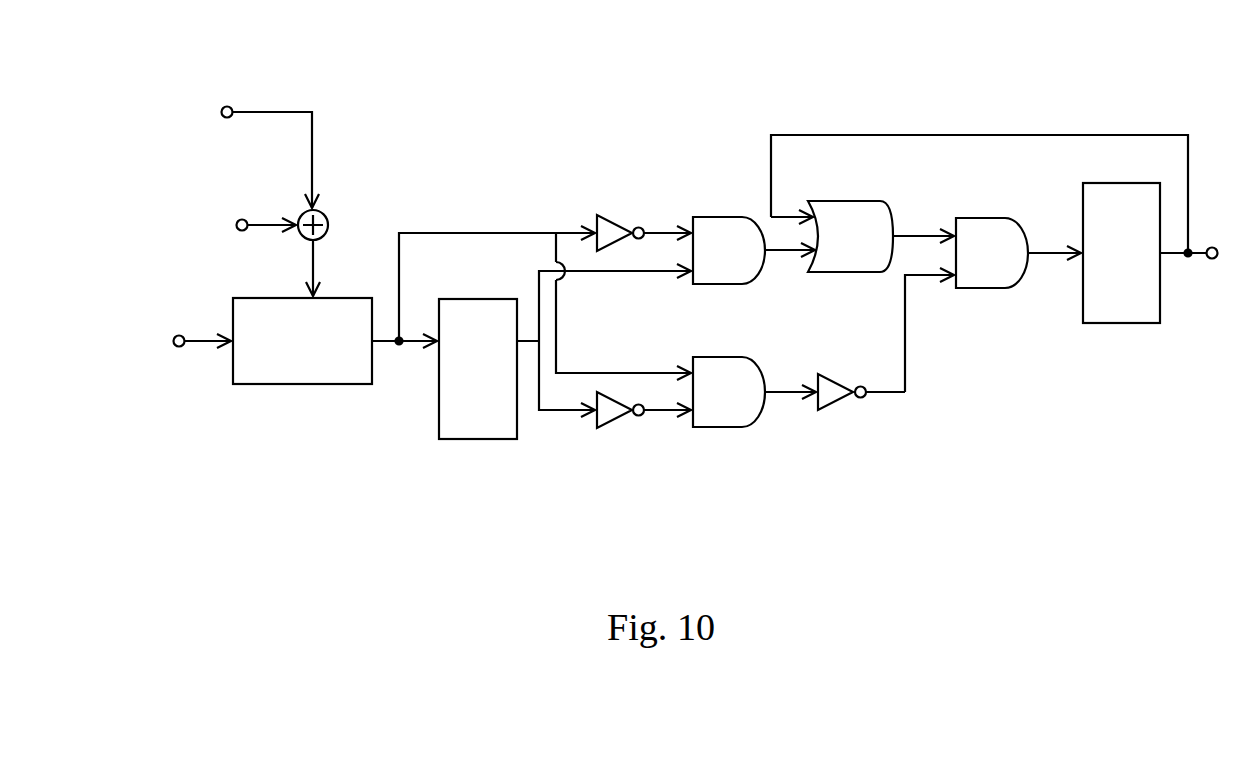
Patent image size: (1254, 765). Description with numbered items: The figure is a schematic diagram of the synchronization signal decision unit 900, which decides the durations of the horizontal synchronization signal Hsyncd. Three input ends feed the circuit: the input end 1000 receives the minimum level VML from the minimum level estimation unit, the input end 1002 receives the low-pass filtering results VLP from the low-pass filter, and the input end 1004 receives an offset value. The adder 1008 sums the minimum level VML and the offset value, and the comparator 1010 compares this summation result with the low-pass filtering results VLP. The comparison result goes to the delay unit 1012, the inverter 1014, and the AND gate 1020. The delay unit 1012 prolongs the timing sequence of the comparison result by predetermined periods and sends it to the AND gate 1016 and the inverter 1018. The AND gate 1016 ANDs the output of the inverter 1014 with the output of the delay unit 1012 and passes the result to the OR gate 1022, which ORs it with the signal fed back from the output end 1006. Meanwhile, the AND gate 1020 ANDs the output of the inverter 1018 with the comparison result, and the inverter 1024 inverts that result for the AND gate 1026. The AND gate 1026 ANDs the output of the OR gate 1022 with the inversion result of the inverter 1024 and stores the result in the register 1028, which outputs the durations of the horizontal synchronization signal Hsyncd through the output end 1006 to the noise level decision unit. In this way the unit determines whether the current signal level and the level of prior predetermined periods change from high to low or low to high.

The synchronization signal decision unit 900 is at (1026, 64).
The input end 1000 is at (242, 219).
The input end 1002 is at (179, 335).
The input end 1004 is at (227, 106).
The output end 1006 is at (1212, 247).
The adder 1008 is at (325, 214).
The comparator 1010 is at (282, 385).
The delay unit 1012 is at (462, 440).
The inverter 1014 is at (612, 214).
The AND gate 1016 is at (718, 216).
The inverter 1018 is at (617, 428).
The AND gate 1020 is at (719, 428).
The OR gate 1022 is at (846, 201).
The inverter 1024 is at (836, 411).
The AND gate 1026 is at (986, 218).
The register 1028 is at (1117, 324).